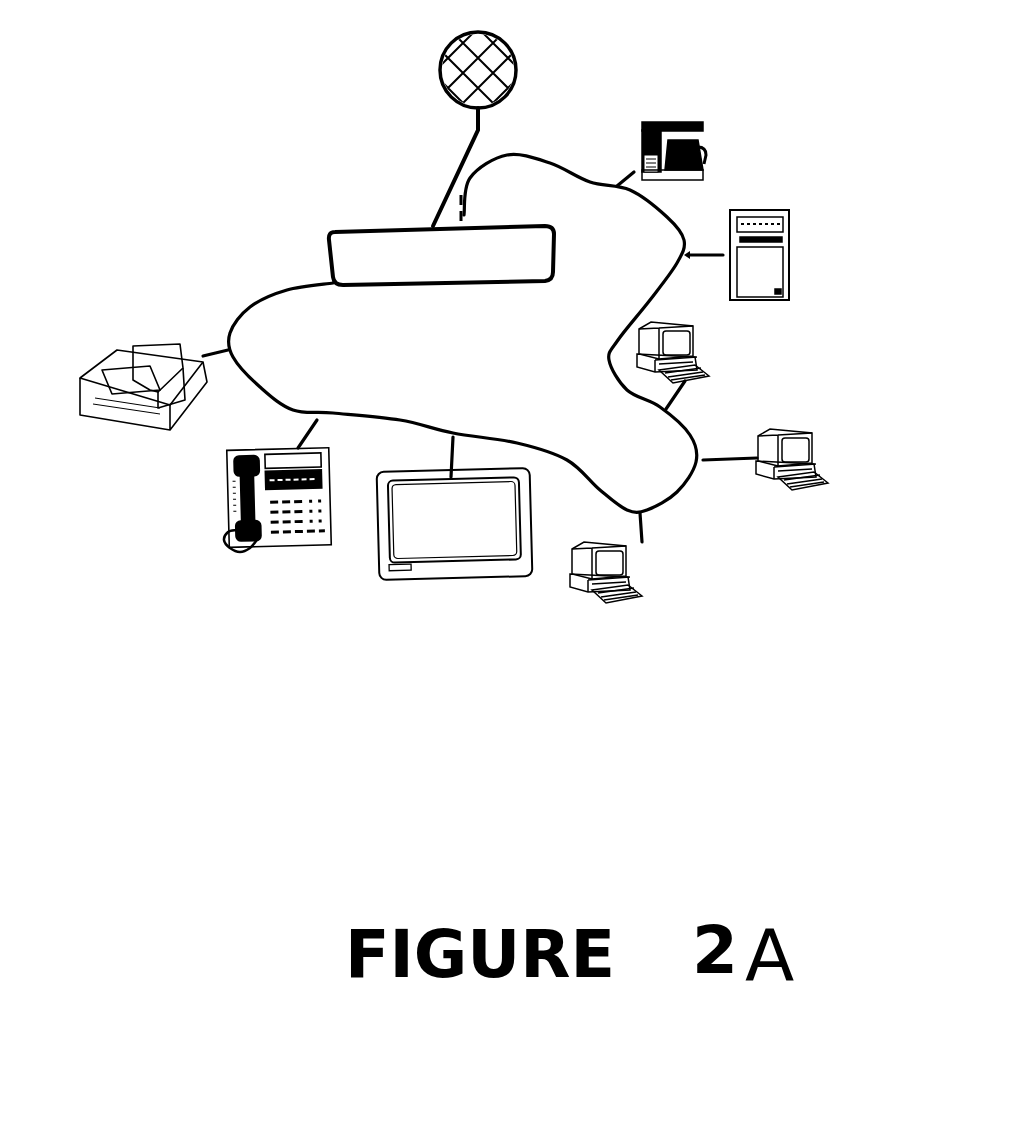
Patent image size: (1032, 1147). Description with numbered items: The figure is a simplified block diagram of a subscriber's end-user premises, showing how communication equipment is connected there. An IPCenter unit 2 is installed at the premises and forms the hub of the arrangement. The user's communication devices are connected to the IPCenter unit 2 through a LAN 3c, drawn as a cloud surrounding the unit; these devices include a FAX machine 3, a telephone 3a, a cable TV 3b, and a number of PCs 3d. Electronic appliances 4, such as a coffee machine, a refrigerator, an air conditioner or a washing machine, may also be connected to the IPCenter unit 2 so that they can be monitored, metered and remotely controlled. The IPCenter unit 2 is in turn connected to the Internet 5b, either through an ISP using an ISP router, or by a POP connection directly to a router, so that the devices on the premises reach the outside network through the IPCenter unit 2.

The IPCenter unit 2 is at (313, 250).
The FAX machine 3 is at (133, 437).
The telephone 3a is at (269, 559).
The cable TV 3b is at (439, 574).
The LAN 3c is at (684, 505).
The PCs 3d is at (802, 497).
The electronic appliances 4 is at (712, 162).
The Internet 5b is at (437, 78).